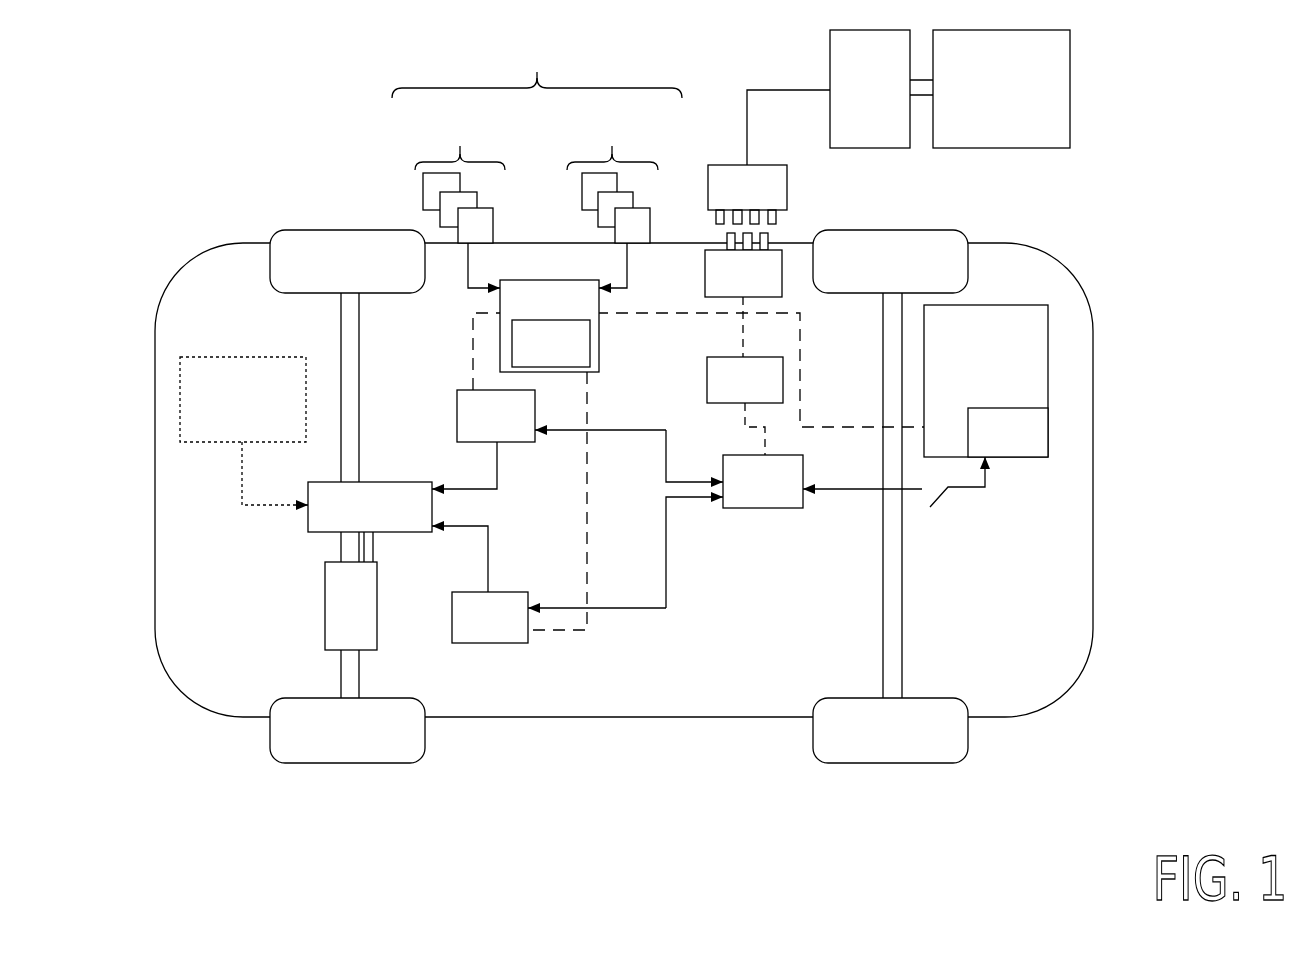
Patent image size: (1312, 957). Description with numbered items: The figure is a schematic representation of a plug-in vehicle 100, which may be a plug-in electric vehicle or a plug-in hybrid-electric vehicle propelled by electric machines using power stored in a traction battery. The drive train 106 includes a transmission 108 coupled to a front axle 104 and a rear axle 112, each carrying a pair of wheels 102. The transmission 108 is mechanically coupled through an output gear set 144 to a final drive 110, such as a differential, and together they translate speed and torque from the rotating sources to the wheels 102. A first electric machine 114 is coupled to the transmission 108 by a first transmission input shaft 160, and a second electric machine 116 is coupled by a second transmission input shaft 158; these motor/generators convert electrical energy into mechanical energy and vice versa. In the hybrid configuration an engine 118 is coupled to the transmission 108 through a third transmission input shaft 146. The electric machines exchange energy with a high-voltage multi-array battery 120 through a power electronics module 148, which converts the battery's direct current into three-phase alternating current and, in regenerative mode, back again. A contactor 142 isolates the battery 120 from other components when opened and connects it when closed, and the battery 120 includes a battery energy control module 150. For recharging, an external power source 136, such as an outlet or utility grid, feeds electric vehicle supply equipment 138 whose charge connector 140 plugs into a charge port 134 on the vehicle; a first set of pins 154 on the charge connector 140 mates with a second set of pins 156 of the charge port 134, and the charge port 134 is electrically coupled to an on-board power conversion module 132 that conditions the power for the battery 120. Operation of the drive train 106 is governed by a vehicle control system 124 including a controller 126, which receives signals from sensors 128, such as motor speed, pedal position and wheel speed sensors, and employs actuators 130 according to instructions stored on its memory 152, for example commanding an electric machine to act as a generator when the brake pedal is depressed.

The plug-in vehicle 100 is at (188, 152).
The wheels 102 is at (619, 496).
The front axle 104 is at (336, 690).
The drive train 106 is at (668, 428).
The transmission 108 is at (370, 507).
The final drive 110 is at (351, 606).
The rear axle 112 is at (883, 373).
The first electric machine 114 is at (590, 436).
The second electric machine 116 is at (587, 570).
The engine 118 is at (243, 399).
The high-voltage multi-array battery 120 is at (986, 381).
The vehicle control system 124 is at (537, 59).
The controller 126 is at (549, 326).
The sensors 128 is at (460, 193).
The actuators 130 is at (614, 193).
The power conversion module 132 is at (745, 406).
The charge port 134 is at (743, 303).
The external power source 136 is at (1001, 89).
The electric vehicle supply equipment 138 is at (840, 97).
The charge connector 140 is at (747, 187).
The contactor 142 is at (930, 507).
The output gear set 144 is at (376, 545).
The third transmission input shaft 146 is at (242, 480).
The power electronics module 148 is at (763, 481).
The battery energy control module 150 is at (1008, 432).
The memory 152 is at (551, 343).
The first set of pins 154 is at (708, 223).
The second set of pins 156 is at (772, 230).
The second transmission input shaft 158 is at (488, 583).
The first transmission input shaft 160 is at (500, 452).